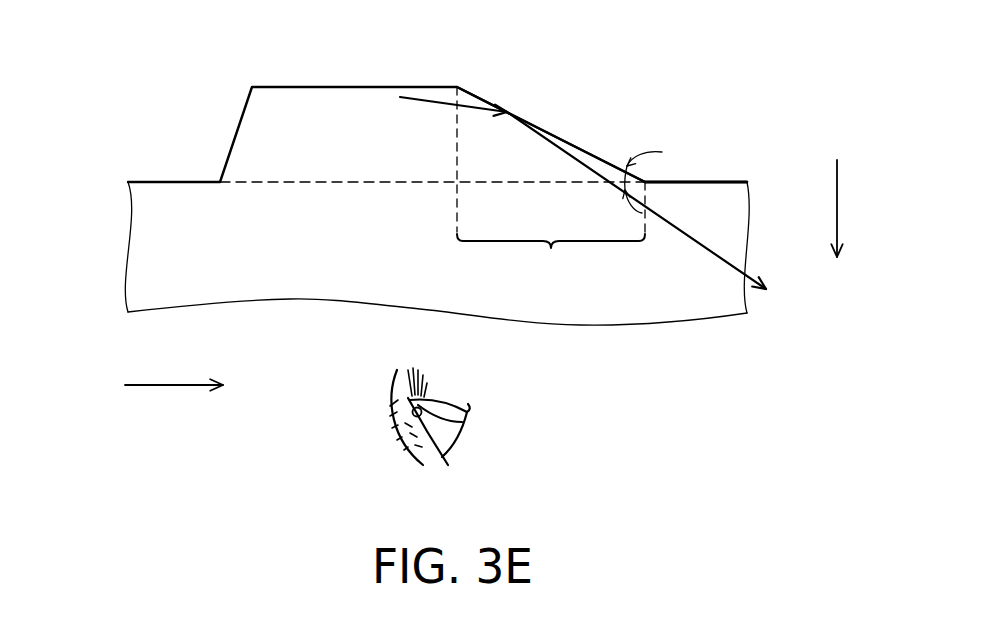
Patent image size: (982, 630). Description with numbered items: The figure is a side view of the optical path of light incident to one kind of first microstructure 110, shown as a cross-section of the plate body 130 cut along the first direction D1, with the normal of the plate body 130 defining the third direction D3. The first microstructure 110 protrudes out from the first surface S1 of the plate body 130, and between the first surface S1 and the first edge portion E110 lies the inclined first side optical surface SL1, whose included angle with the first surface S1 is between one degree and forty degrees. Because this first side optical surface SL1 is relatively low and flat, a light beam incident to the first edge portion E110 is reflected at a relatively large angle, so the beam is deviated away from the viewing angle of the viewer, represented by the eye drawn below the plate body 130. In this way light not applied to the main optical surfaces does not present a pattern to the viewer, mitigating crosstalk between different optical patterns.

The plate body 130 is at (146, 225).
The first microstructure 110 is at (822, 385).
The first side optical surface SL1 is at (487, 101).
The first surface S1 is at (708, 184).
The first edge portion E110 is at (551, 186).
The first direction D1 is at (174, 368).
The third direction D3 is at (853, 208).